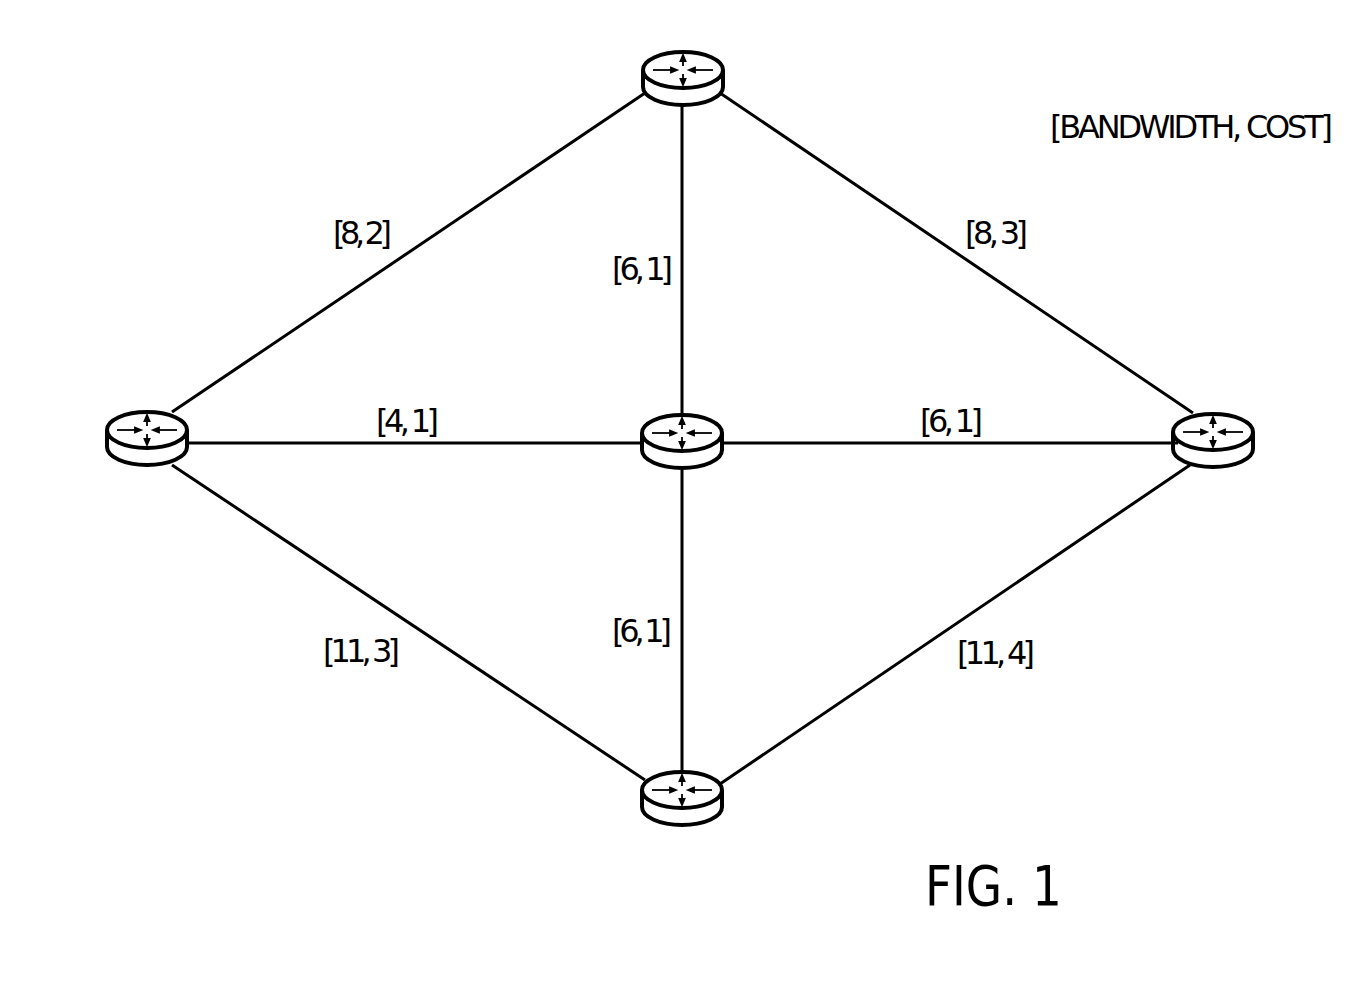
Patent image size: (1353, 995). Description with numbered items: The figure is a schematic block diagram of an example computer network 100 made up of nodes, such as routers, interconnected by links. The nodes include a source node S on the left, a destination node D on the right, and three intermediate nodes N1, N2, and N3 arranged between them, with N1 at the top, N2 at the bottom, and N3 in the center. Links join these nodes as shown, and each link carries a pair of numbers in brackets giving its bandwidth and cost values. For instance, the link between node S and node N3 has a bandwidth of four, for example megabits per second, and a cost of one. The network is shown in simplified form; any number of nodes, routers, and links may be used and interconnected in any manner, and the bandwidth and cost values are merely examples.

The computer network 100 is at (182, 104).
The source node S is at (118, 417).
The destination node D is at (1245, 462).
The intermediate node N1 is at (662, 52).
The intermediate node N2 is at (663, 825).
The intermediate node N3 is at (702, 413).